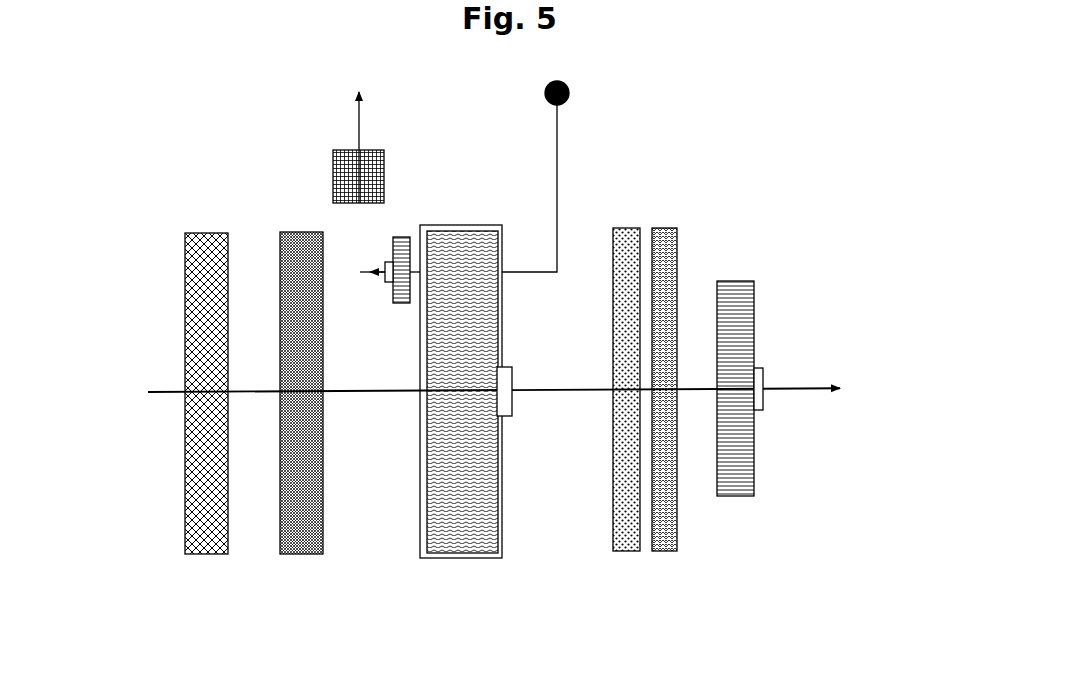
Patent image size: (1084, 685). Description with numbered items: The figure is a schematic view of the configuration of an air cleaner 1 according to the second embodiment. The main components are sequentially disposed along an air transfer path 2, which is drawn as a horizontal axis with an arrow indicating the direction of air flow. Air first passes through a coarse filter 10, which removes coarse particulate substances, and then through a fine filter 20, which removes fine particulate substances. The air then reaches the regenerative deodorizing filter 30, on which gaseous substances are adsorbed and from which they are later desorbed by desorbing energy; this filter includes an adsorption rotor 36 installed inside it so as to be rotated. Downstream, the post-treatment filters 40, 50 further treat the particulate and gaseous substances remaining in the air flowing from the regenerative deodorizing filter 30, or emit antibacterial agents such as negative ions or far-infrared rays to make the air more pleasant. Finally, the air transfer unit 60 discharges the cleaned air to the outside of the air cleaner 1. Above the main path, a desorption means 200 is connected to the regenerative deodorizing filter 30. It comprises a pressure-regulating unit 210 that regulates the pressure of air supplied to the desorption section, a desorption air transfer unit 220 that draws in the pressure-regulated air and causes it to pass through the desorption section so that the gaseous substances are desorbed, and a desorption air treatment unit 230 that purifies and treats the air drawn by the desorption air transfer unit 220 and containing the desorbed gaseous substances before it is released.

The air cleaner 1 is at (721, 151).
The air transfer path 2 is at (805, 386).
The coarse filter 10 is at (205, 556).
The fine filter 20 is at (301, 556).
The regenerative deodorizing filter 30 is at (500, 433).
The adsorption rotor 36 is at (489, 522).
The post-treatment filter 40 is at (627, 552).
The post-treatment filter 50 is at (668, 552).
The air transfer unit 60 is at (737, 497).
The desorption means 200 is at (573, 147).
The pressure-regulating unit 210 is at (570, 92).
The desorption air transfer unit 220 is at (402, 238).
The desorption air treatment unit 230 is at (384, 156).